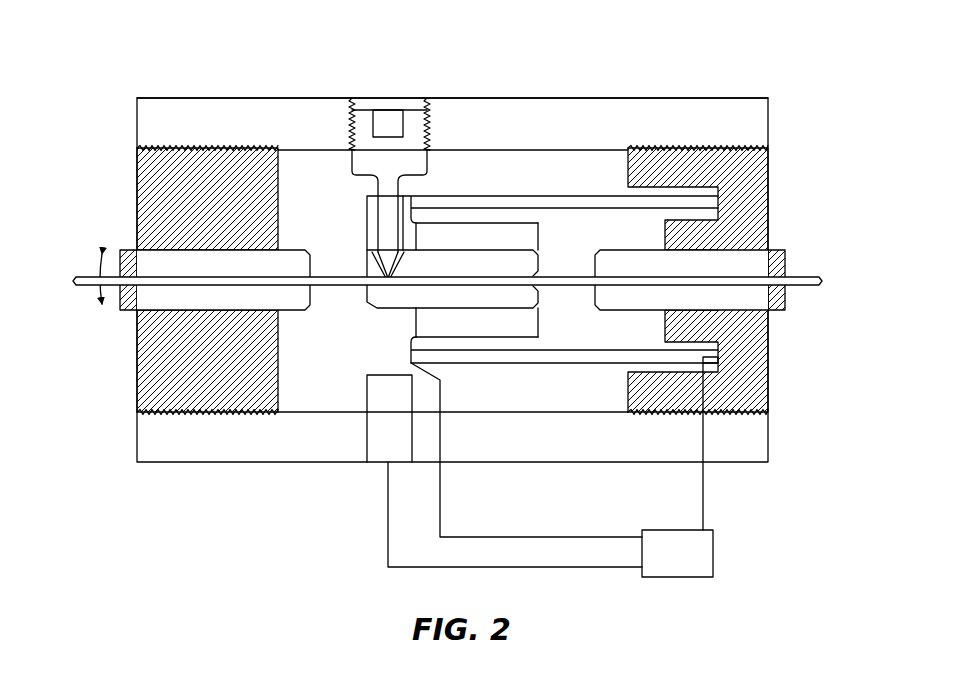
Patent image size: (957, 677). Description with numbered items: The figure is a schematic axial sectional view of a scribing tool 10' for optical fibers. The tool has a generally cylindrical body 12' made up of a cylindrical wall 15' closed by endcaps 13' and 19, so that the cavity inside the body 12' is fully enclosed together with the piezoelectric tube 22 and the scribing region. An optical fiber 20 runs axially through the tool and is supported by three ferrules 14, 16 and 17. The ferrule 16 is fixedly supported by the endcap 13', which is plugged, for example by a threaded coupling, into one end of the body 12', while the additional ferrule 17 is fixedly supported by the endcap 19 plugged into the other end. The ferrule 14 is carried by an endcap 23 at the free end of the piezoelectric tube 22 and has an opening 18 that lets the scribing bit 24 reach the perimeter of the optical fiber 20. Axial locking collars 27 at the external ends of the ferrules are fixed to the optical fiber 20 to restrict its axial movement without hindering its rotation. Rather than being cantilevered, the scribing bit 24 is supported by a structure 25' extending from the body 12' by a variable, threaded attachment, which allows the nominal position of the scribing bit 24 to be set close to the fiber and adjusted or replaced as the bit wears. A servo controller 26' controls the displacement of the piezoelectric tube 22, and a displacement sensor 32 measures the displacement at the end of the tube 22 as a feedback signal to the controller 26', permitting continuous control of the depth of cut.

The scribing tool 10' is at (409, 245).
The body 12' is at (487, 246).
The endcap 13' is at (553, 406).
The ferrule 14 is at (500, 298).
The cylindrical wall 15' is at (452, 107).
The ferrule 16 is at (752, 302).
The ferrule 17 is at (163, 299).
The opening 18 is at (375, 265).
The endcap 19 is at (153, 387).
The optical fiber 20 is at (812, 274).
The piezoelectric tube 22 is at (529, 200).
The endcap 23 is at (375, 349).
The scribing bit 24 is at (391, 278).
The structure 25' is at (430, 157).
The servo controller 26' is at (550, 470).
The axial locking collars 27 is at (128, 248).
The displacement sensor 32 is at (383, 450).